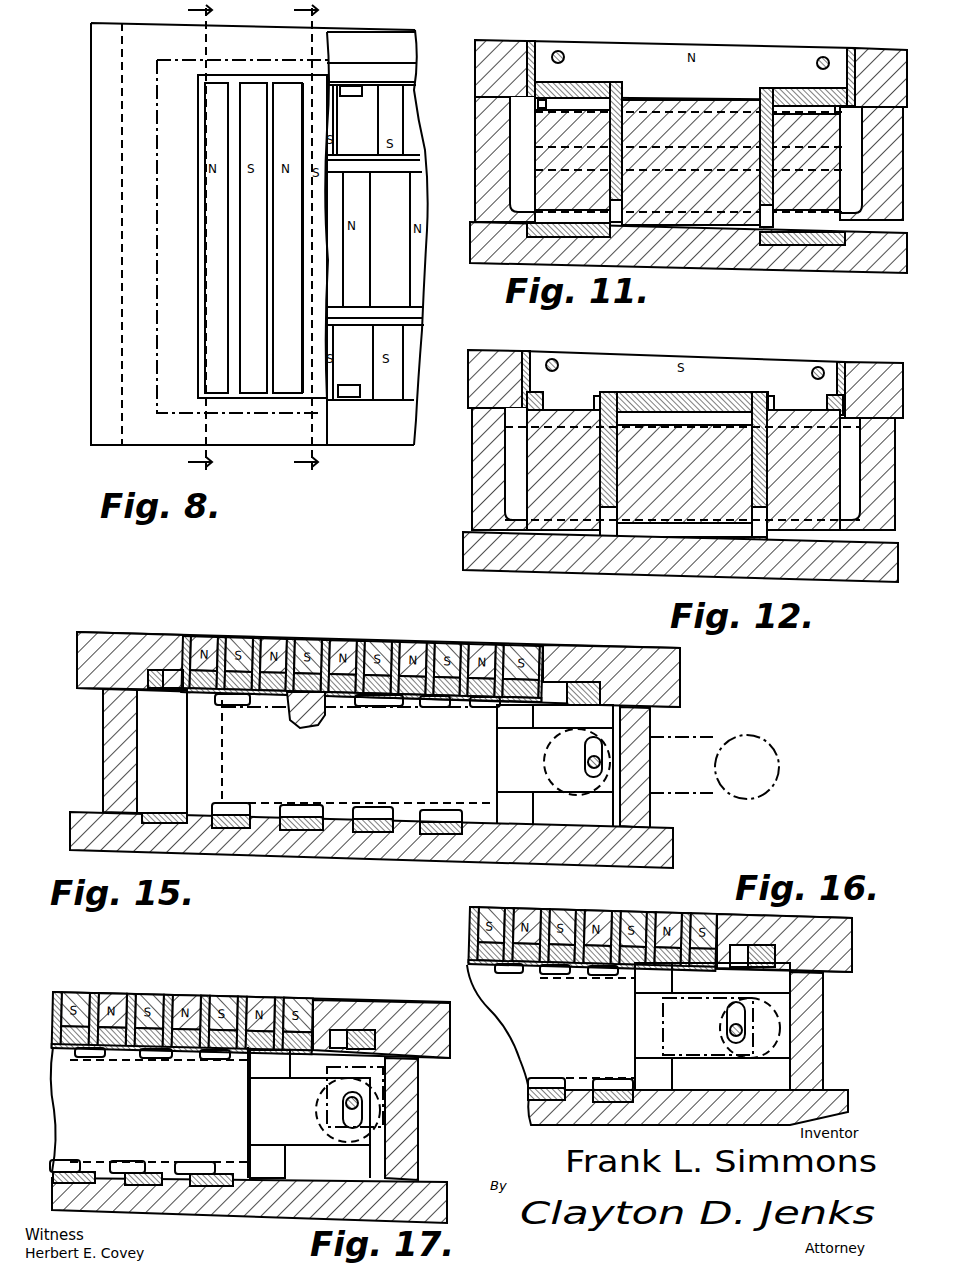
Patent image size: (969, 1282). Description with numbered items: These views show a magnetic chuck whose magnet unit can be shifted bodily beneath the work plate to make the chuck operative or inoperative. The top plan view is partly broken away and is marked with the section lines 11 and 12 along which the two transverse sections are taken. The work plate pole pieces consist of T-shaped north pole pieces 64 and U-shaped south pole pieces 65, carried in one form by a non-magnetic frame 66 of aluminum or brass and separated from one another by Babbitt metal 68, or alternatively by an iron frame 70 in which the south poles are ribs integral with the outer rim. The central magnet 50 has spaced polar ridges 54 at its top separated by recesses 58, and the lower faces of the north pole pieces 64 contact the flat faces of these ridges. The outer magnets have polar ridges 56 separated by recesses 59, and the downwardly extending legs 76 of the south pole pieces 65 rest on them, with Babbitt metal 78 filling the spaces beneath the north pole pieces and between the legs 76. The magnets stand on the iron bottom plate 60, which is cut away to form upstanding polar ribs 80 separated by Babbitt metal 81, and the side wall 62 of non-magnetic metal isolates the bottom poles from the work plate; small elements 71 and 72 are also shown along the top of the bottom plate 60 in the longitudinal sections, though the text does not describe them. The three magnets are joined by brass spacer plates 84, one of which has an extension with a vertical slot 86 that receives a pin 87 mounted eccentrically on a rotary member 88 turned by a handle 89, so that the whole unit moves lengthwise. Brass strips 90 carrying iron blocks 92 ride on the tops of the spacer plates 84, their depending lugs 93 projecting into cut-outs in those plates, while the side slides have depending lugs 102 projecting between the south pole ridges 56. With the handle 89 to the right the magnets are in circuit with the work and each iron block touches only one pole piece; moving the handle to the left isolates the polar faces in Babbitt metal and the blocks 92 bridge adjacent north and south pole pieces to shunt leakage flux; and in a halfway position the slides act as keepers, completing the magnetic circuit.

In FIG. 8, the section line 11 is at (212, 239).
In FIG. 8, the section line 12 is at (319, 239).
In FIG. 11, the central magnet 50 is at (690, 162).
In FIG. 8, the polar ridges 54 is at (355, 239).
In FIG. 8, the polar ridges 56 is at (368, 242).
In FIG. 12, the polar ridges 56 is at (694, 420).
In FIG. 8, the recesses 58 is at (391, 239).
In FIG. 8, the recesses 59 is at (355, 120).
In FIG. 12, the iron bottom plate 60 is at (680, 557).
In FIG. 15, the iron bottom plate 60 is at (418, 855).
In FIG. 16, the iron bottom plate 60 is at (530, 1110).
In FIG. 17, the iron bottom plate 60 is at (226, 1208).
In FIG. 8, the side wall 62 is at (374, 238).
In FIG. 11, the side wall 62 is at (689, 159).
In FIG. 12, the side wall 62 is at (683, 469).
In FIG. 15, the side wall 62 is at (104, 757).
In FIG. 16, the side wall 62 is at (825, 1027).
In FIG. 17, the side wall 62 is at (418, 1167).
In FIG. 8, the north pole pieces 64 is at (216, 238).
In FIG. 11, the north pole pieces 64 is at (691, 73).
In FIG. 15, the north pole pieces 64 is at (196, 636).
In FIG. 16, the north pole pieces 64 is at (520, 912).
In FIG. 17, the north pole pieces 64 is at (110, 996).
In FIG. 8, the south pole pieces 65 is at (253, 238).
In FIG. 12, the south pole pieces 65 is at (683, 381).
In FIG. 15, the south pole pieces 65 is at (308, 638).
In FIG. 16, the south pole pieces 65 is at (620, 912).
In FIG. 17, the south pole pieces 65 is at (212, 996).
In FIG. 8, the non-magnetic frame 66 is at (257, 234).
In FIG. 8, the Babbitt metal 68 is at (196, 100).
In FIG. 11, the iron frame 70 is at (691, 73).
In FIG. 15, the iron frame 70 is at (78, 647).
In FIG. 16, the iron frame 70 is at (848, 950).
In FIG. 17, the iron frame 70 is at (444, 1048).
In FIG. 15, the guide strip 71 is at (268, 830).
In FIG. 16, the guide strip 71 is at (547, 1080).
In FIG. 17, the guide strip 71 is at (95, 1162).
In FIG. 15, the guide strip 72 is at (312, 832).
In FIG. 16, the guide strip 72 is at (586, 1080).
In FIG. 17, the guide strip 72 is at (135, 1162).
In FIG. 12, the legs 76 is at (695, 405).
In FIG. 11, the Babbitt metal 78 is at (691, 95).
In FIG. 12, the Babbitt metal 78 is at (685, 403).
In FIG. 11, the polar ribs 80 is at (688, 247).
In FIG. 11, the Babbitt metal 81 is at (686, 236).
In FIG. 12, the Babbitt metal 81 is at (683, 544).
In FIG. 8, the spacer plates 84 is at (418, 163).
In FIG. 11, the spacer plates 84 is at (617, 136).
In FIG. 12, the spacer plates 84 is at (613, 490).
In FIG. 15, the spacer plates 84 is at (560, 727).
In FIG. 16, the spacer plates 84 is at (712, 978).
In FIG. 17, the spacer plates 84 is at (290, 1084).
In FIG. 15, the vertical slot 86 is at (604, 752).
In FIG. 16, the vertical slot 86 is at (730, 1040).
In FIG. 17, the vertical slot 86 is at (366, 1126).
In FIG. 15, the pin 87 is at (602, 770).
In FIG. 16, the pin 87 is at (737, 1042).
In FIG. 17, the pin 87 is at (360, 1104).
In FIG. 15, the rotary member 88 is at (555, 777).
In FIG. 16, the rotary member 88 is at (766, 1012).
In FIG. 17, the rotary member 88 is at (315, 1128).
In FIG. 15, the handle 89 is at (716, 730).
In FIG. 16, the handle 89 is at (708, 1026).
In FIG. 17, the handle 89 is at (384, 1075).
In FIG. 11, the brass strips 90 is at (762, 100).
In FIG. 12, the brass strips 90 is at (544, 408).
In FIG. 15, the brass strips 90 is at (418, 706).
In FIG. 16, the brass strips 90 is at (592, 976).
In FIG. 17, the brass strips 90 is at (236, 1058).
In FIG. 11, the iron blocks 92 is at (545, 84).
In FIG. 12, the iron blocks 92 is at (538, 396).
In FIG. 15, the iron blocks 92 is at (262, 707).
In FIG. 16, the iron blocks 92 is at (552, 975).
In FIG. 17, the iron blocks 92 is at (186, 1058).
In FIG. 15, the depending lugs 93 is at (352, 708).
In FIG. 16, the depending lugs 93 is at (520, 974).
In FIG. 17, the depending lugs 93 is at (108, 1057).
In FIG. 12, the depending lugs 102 is at (503, 428).